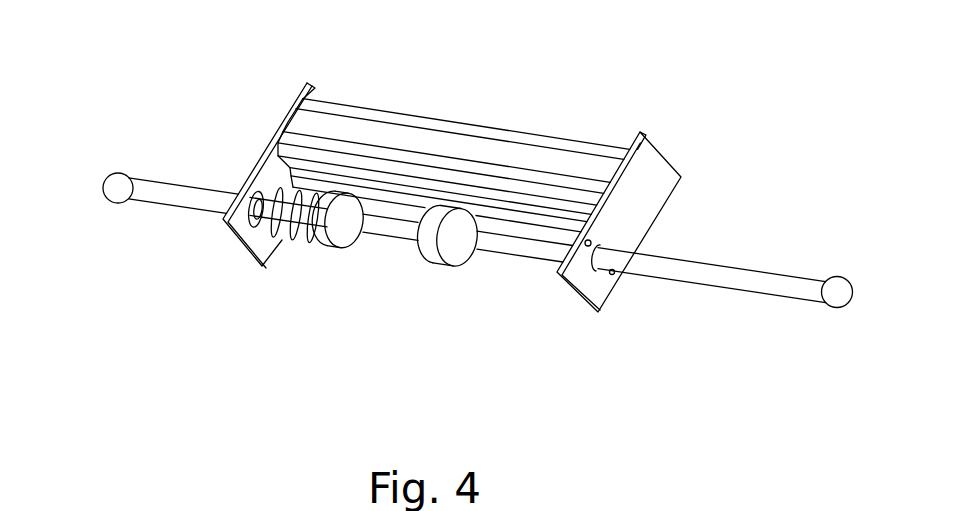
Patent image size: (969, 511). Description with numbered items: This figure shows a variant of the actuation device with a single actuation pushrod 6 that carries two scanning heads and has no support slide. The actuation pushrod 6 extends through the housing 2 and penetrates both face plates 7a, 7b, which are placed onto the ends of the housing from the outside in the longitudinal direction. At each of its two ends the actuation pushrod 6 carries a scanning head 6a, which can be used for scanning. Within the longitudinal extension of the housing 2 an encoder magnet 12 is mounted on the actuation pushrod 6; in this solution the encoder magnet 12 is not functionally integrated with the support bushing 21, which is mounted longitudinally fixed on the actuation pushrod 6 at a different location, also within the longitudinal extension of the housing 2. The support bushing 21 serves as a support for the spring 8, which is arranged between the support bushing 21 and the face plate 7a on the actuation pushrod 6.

The housing 2 is at (541, 125).
The actuation pushrod 6 is at (148, 205).
The scanning head 6a is at (115, 165).
The face plate 7a is at (297, 80).
The face plate 7b is at (683, 162).
The spring 8 is at (290, 237).
The encoder magnet 12 is at (448, 265).
The support bushing 21 is at (323, 243).